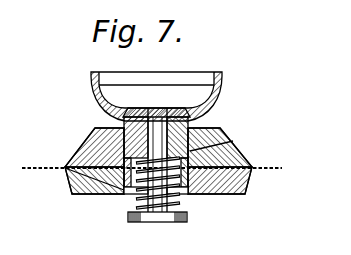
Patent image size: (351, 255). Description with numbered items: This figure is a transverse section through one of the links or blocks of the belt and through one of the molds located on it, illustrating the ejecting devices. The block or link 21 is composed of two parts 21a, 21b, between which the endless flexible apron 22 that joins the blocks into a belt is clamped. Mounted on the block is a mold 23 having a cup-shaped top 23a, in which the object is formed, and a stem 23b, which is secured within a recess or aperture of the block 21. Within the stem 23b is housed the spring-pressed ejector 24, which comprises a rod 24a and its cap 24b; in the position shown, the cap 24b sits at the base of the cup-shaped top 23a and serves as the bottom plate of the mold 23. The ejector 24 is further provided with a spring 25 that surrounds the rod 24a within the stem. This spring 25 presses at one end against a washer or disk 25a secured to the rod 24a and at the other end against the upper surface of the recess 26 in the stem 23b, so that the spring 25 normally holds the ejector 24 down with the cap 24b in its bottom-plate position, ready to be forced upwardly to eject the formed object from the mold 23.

The block or link 21 is at (238, 147).
The part of block 21a is at (250, 189).
The part of block 21b is at (90, 145).
The endless flexible apron 22 is at (282, 168).
The mold 23 is at (157, 87).
The cup-shaped top 23a is at (216, 77).
The stem 23b is at (72, 187).
The spring-pressed ejector 24 is at (155, 181).
The rod 24a is at (177, 199).
The cap 24b is at (163, 112).
The spring 25 is at (128, 194).
The washer or disk 25a is at (185, 224).
The recess 26 is at (233, 141).